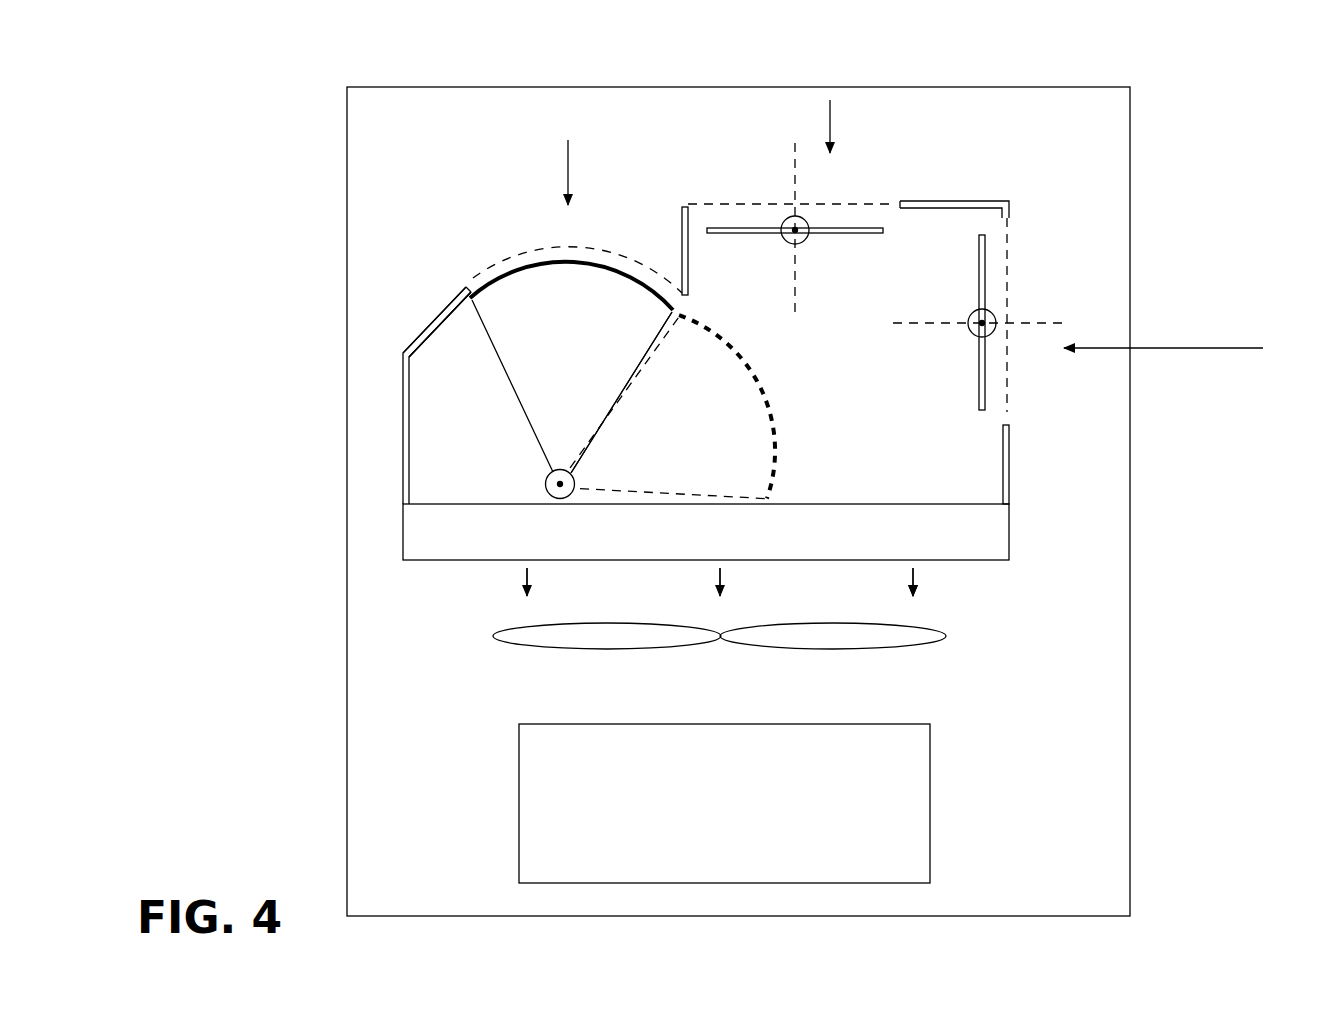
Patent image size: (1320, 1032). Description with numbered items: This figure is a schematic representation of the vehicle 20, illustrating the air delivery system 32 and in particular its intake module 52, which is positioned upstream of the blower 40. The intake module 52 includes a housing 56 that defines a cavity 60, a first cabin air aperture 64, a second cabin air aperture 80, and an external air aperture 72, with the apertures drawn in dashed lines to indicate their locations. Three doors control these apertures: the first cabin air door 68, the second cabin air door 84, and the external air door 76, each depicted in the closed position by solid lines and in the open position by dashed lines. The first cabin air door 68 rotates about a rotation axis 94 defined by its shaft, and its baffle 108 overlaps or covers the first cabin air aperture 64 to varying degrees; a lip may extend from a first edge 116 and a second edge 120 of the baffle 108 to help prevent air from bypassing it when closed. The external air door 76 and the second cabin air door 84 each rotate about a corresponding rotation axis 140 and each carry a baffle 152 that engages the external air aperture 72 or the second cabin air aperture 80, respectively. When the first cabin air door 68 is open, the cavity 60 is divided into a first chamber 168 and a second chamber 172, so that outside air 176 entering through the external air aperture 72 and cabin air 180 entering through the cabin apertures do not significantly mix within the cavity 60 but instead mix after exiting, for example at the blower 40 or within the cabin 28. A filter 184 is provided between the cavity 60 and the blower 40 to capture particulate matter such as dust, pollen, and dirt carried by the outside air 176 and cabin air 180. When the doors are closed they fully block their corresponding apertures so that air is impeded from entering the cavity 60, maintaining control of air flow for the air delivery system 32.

The vehicle 20 is at (773, 464).
The cabin 28 is at (724, 824).
The air delivery system 32 is at (345, 142).
The blower 40 is at (960, 645).
The intake module 52 is at (980, 198).
The housing 56 is at (402, 413).
The cavity 60 is at (710, 287).
The first cabin air aperture 64 is at (528, 242).
The first cabin air door 68 is at (526, 243).
The external air aperture 72 is at (1008, 248).
The external air door 76 is at (988, 397).
The second cabin air aperture 80 is at (728, 197).
The second cabin air door 84 is at (867, 223).
The rotation axis 94 is at (548, 500).
The baffle 108 is at (597, 253).
The first edge 116 is at (677, 307).
The second edge 120 is at (460, 292).
The rotation axis 140 is at (792, 222).
The baffle 152 is at (833, 223).
The first chamber 168 is at (433, 362).
The second chamber 172 is at (866, 320).
The outside air 176 is at (1208, 348).
The cabin air 180 is at (566, 155).
The filter 184 is at (973, 532).